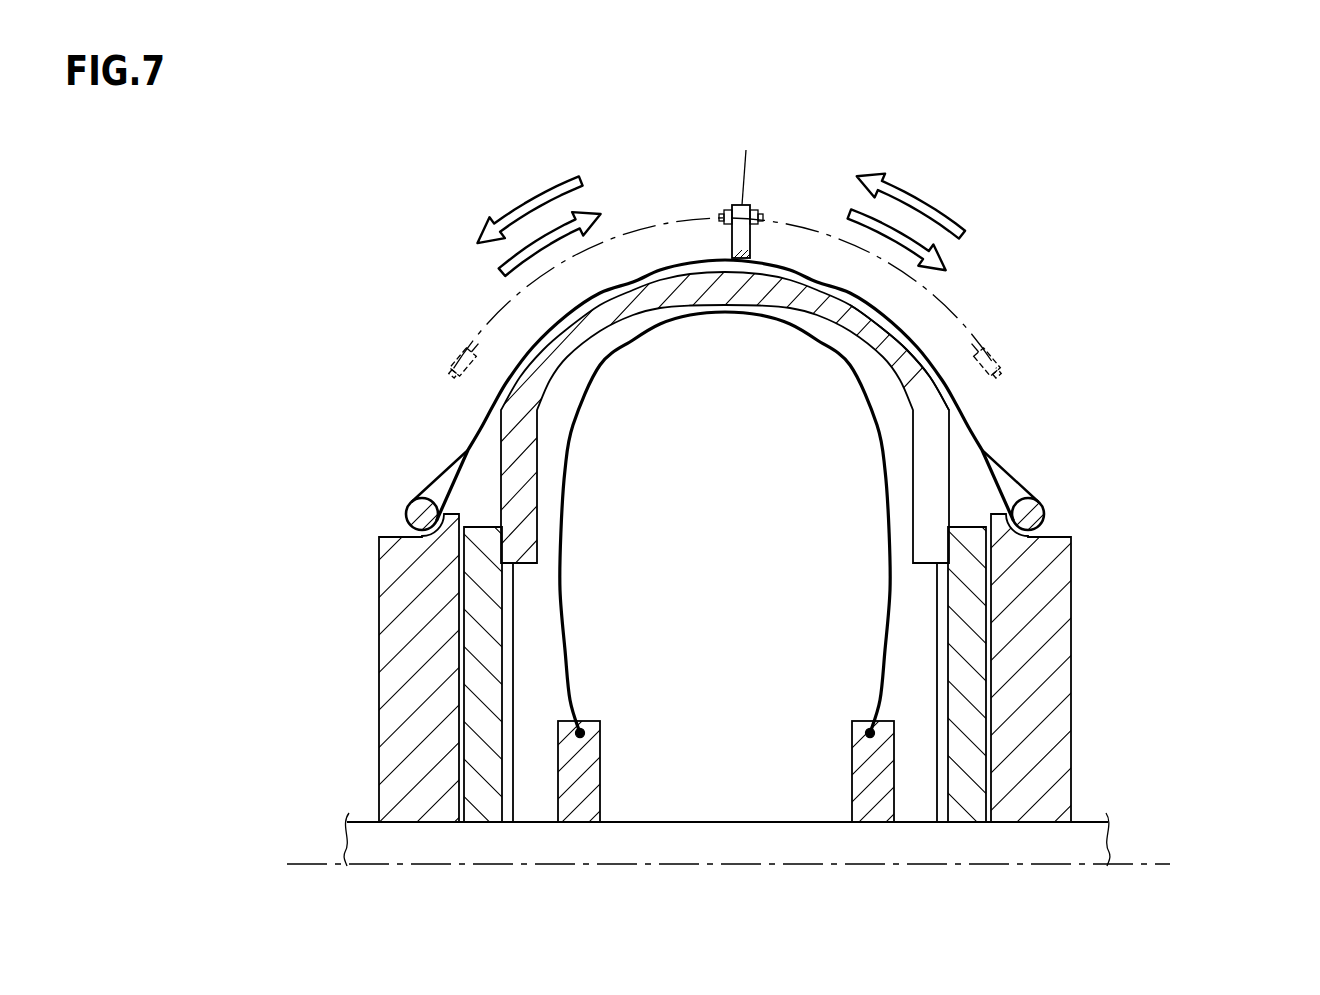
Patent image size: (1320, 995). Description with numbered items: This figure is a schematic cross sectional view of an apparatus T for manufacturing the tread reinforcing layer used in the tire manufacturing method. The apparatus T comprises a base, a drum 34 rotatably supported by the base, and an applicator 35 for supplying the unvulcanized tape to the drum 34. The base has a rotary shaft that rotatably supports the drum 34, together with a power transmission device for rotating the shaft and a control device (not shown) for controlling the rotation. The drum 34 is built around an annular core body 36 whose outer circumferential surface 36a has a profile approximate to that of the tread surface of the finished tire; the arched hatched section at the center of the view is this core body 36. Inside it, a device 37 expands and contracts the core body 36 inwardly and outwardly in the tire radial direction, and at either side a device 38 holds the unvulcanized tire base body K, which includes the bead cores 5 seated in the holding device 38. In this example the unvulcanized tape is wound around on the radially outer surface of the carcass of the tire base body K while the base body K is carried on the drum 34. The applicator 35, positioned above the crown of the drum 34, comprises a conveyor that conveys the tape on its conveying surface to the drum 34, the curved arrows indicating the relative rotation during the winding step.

The applicator 35 is at (777, 186).
The apparatus T is at (695, 318).
The drum 34 is at (997, 279).
The outer circumferential surface 36a is at (940, 385).
The annular core body 36 is at (928, 460).
The unvulcanized tire base body K is at (695, 400).
The bead cores 5 is at (425, 512).
The device for holding 38 is at (415, 690).
The device for expanding and contracting 37 is at (883, 645).